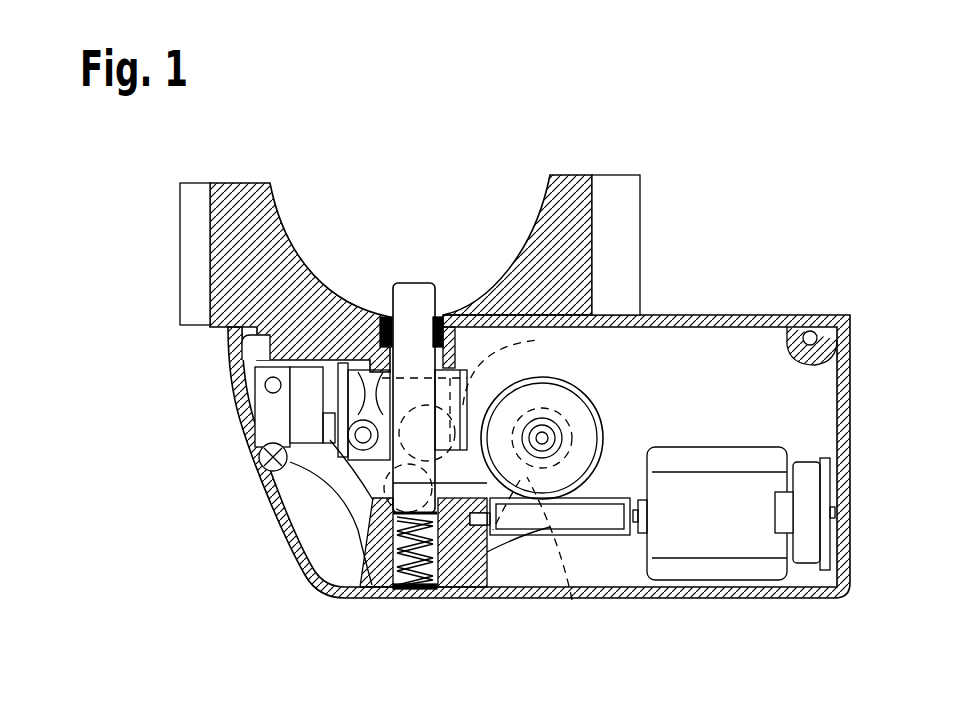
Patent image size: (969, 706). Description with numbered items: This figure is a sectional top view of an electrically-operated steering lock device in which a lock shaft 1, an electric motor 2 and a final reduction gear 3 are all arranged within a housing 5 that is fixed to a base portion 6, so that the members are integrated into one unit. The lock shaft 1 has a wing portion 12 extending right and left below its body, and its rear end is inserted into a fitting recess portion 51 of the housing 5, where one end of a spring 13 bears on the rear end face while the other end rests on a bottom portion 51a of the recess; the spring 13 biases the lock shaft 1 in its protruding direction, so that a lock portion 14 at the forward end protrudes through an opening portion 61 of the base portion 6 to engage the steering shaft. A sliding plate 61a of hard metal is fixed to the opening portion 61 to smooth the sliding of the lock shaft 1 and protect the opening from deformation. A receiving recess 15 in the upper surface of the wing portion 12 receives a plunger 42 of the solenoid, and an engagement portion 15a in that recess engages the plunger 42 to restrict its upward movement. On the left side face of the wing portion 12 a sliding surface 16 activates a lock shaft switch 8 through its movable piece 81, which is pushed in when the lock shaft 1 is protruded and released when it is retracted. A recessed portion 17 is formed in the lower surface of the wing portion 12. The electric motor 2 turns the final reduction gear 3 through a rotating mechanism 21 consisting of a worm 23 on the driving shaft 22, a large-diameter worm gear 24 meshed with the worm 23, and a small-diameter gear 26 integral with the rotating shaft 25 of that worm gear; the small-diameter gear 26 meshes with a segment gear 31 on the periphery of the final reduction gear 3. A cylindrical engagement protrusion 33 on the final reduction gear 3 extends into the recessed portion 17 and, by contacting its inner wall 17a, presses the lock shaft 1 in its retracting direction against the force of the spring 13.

The lock shaft 1 is at (368, 280).
The electric motor 2 is at (760, 548).
The final reduction gear 3 is at (497, 557).
The housing 5 is at (700, 597).
The base portion 6 is at (567, 177).
The lock shaft switch 8 is at (237, 400).
The wing portion 12 is at (507, 272).
The spring 13 is at (450, 597).
The lock portion 14 is at (415, 283).
The receiving recess 15 is at (372, 288).
The engagement portion 15a is at (235, 352).
The sliding surface 16 is at (320, 398).
The recessed portion 17 is at (457, 405).
The inner wall 17a is at (387, 483).
The rotating mechanism 21 is at (610, 388).
The driving shaft 22 is at (637, 527).
The worm 23 is at (600, 537).
The large-diameter worm gear 24 is at (603, 420).
The rotating shaft 25 is at (545, 438).
The small-diameter gear 26 is at (572, 443).
The segment gear 31 is at (578, 600).
The engagement protrusion 33 is at (520, 410).
The plunger 42 is at (335, 522).
The fitting recess portion 51 is at (380, 590).
The bottom portion 51a is at (413, 592).
The opening portion 61 is at (437, 285).
The sliding plate 61a is at (437, 285).
The movable piece 81 is at (283, 477).